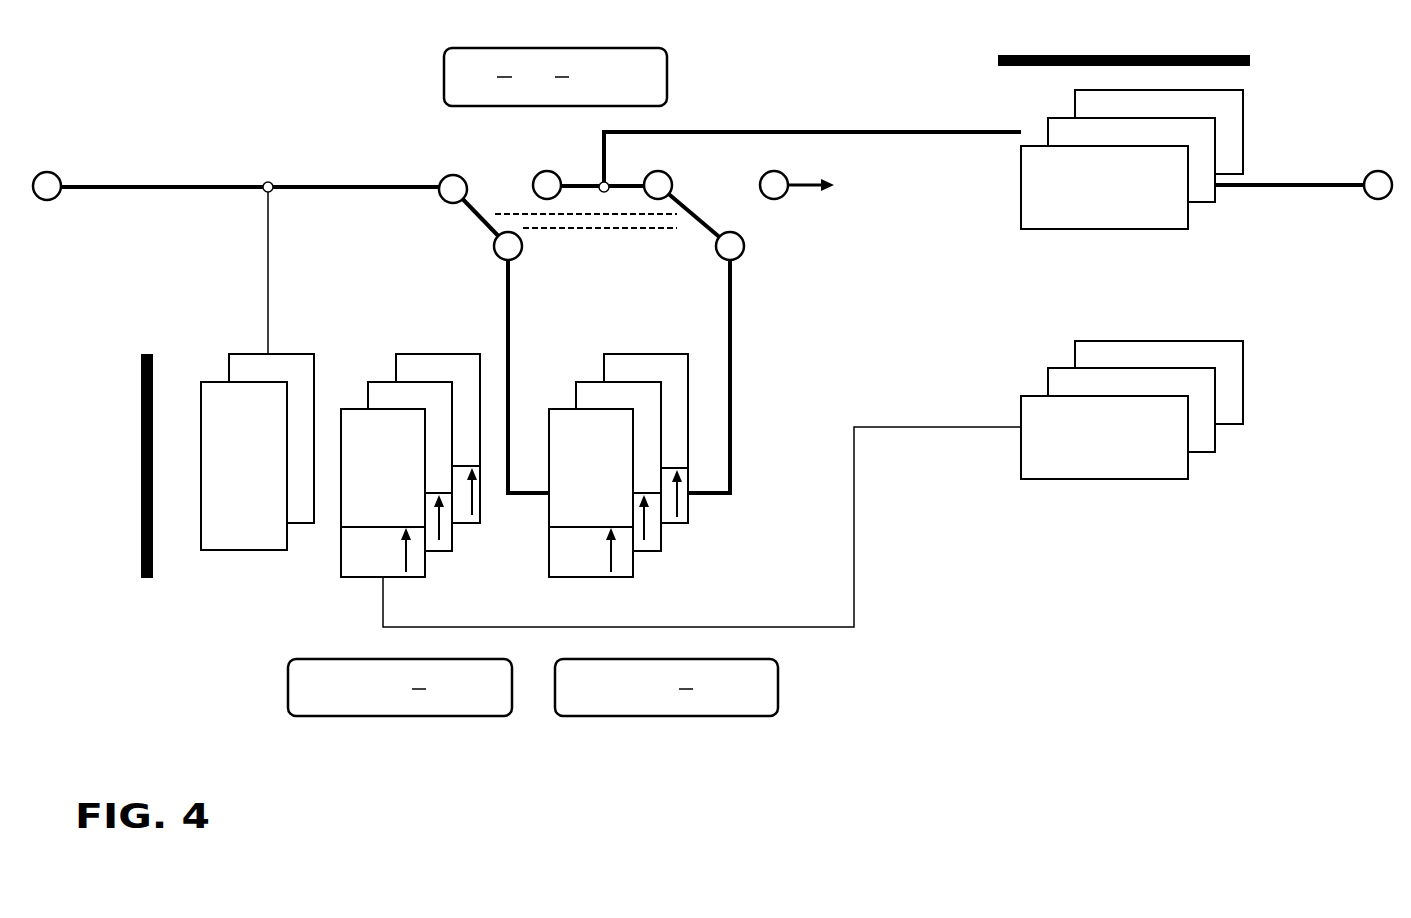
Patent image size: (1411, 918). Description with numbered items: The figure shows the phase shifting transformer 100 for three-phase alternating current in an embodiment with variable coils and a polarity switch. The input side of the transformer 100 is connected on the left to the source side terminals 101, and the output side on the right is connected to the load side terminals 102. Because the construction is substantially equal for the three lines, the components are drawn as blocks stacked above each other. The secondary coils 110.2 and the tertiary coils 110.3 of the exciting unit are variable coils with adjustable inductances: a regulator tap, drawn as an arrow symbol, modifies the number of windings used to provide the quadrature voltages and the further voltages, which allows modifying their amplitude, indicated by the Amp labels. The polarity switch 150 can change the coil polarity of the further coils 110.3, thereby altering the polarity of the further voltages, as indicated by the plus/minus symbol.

The phase shifting transformer 100 is at (719, 409).
The source side terminals 101 is at (469, 242).
The load side terminals 102 is at (1310, 171).
The polarity switch 150 is at (730, 312).
The secondary coils 110.2 is at (410, 465).
The tertiary coils 110.3 is at (618, 465).